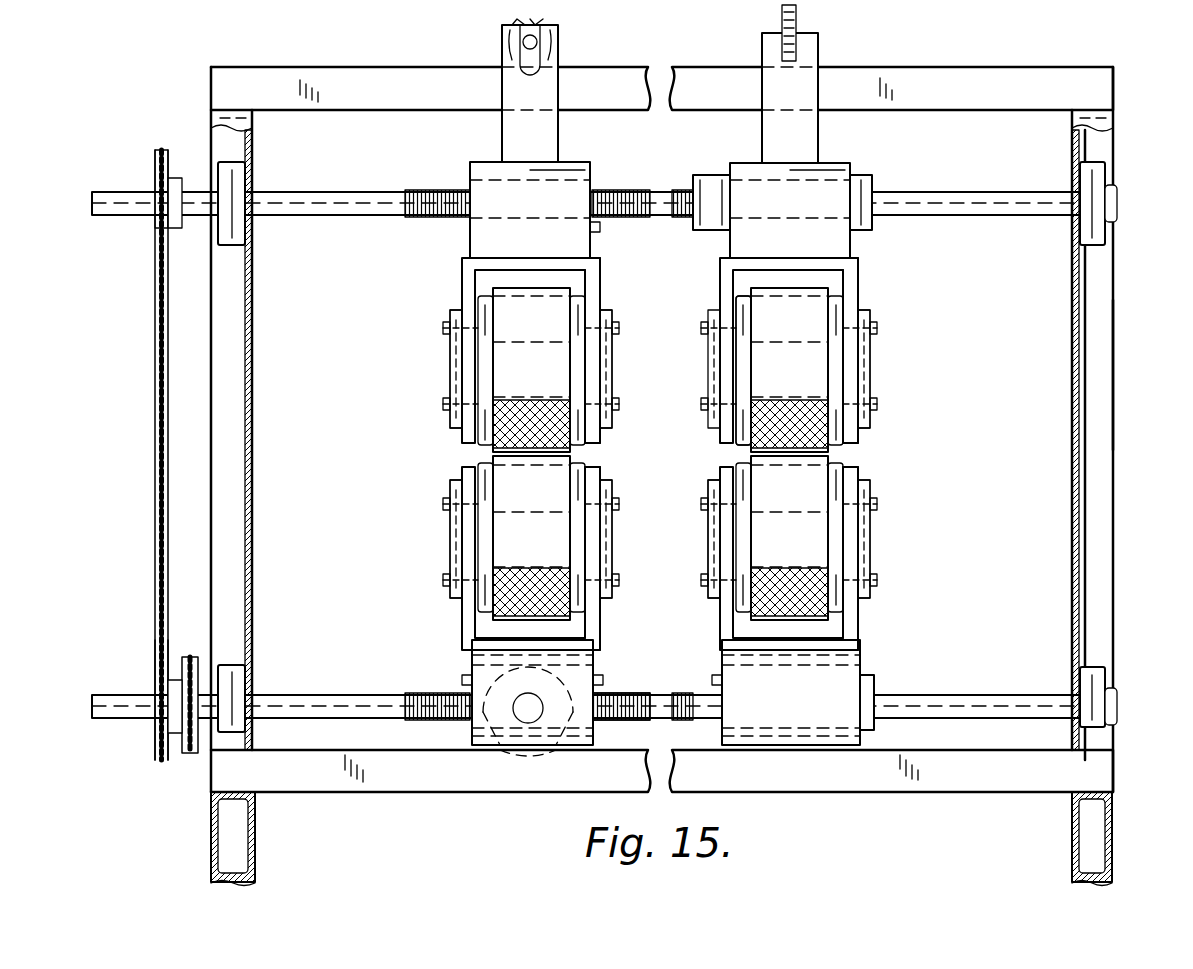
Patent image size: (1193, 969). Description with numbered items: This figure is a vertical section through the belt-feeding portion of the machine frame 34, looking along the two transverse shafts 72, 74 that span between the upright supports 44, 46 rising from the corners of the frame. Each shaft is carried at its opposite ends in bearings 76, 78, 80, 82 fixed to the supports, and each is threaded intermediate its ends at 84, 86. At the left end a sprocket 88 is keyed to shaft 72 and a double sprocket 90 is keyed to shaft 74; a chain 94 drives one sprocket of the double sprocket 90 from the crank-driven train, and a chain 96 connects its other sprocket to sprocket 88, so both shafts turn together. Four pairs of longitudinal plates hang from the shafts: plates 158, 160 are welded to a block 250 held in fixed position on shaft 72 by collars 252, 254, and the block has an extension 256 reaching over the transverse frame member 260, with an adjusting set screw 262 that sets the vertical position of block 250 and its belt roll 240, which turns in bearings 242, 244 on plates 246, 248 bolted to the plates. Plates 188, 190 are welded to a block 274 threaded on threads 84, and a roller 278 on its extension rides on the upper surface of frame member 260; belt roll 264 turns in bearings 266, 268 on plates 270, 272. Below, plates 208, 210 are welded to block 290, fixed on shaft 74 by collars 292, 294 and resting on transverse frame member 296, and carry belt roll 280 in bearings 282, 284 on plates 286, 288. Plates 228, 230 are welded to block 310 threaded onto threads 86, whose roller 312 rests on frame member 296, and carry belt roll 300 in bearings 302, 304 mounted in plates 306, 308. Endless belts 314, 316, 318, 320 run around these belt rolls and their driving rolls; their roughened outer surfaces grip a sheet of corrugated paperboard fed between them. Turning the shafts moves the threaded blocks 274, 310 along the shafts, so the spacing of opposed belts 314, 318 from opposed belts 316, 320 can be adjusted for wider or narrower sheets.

The machine frame 34 is at (1118, 387).
The support 44 is at (1099, 116).
The support 46 is at (222, 120).
The shaft 72 is at (1009, 190).
The shaft 74 is at (1030, 662).
The bearing 76 is at (232, 226).
The bearing 78 is at (1100, 178).
The bearing 80 is at (228, 682).
The bearing 82 is at (1102, 674).
The threads 84 is at (687, 190).
The threads 86 is at (690, 690).
The sprocket 88 is at (155, 166).
The double sprocket 90 is at (160, 740).
The chain 94 is at (190, 660).
The chain 96 is at (160, 365).
The plate 158 is at (858, 278).
The plate 160 is at (717, 272).
The plate 188 is at (600, 280).
The plate 190 is at (462, 287).
The plate 208 is at (858, 614).
The plate 210 is at (720, 612).
The plate 228 is at (600, 625).
The plate 230 is at (462, 612).
The belt roll 240 is at (838, 303).
The bearing 242 is at (708, 352).
The bearing 244 is at (875, 355).
The plate 246 is at (708, 322).
The plate 248 is at (872, 325).
The block 250 is at (842, 166).
The collar 252 is at (712, 175).
The collar 254 is at (873, 178).
The extension 256 is at (822, 84).
The transverse frame member 260 is at (1024, 48).
The adjusting set screw 262 is at (802, 30).
The belt roll 264 is at (585, 302).
The bearing 266 is at (458, 358).
The bearing 268 is at (612, 380).
The plate 270 is at (450, 318).
The plate 272 is at (612, 322).
The block 274 is at (481, 164).
The roller 278 is at (522, 50).
The belt roll 280 is at (838, 470).
The bearing 282 is at (875, 520).
The bearing 284 is at (708, 548).
The plate 286 is at (872, 490).
The plate 288 is at (708, 490).
The block 290 is at (850, 660).
The collar 292 is at (875, 680).
The collar 294 is at (692, 688).
The transverse frame member 296 is at (988, 792).
The belt roll 300 is at (588, 460).
The bearing 302 is at (612, 522).
The bearing 304 is at (458, 522).
The plate 306 is at (600, 478).
The plate 308 is at (450, 490).
The block 310 is at (480, 672).
The roller 312 is at (525, 760).
The endless belt 314 is at (804, 296).
The endless belt 316 is at (542, 296).
The endless belt 318 is at (820, 555).
The endless belt 320 is at (505, 552).